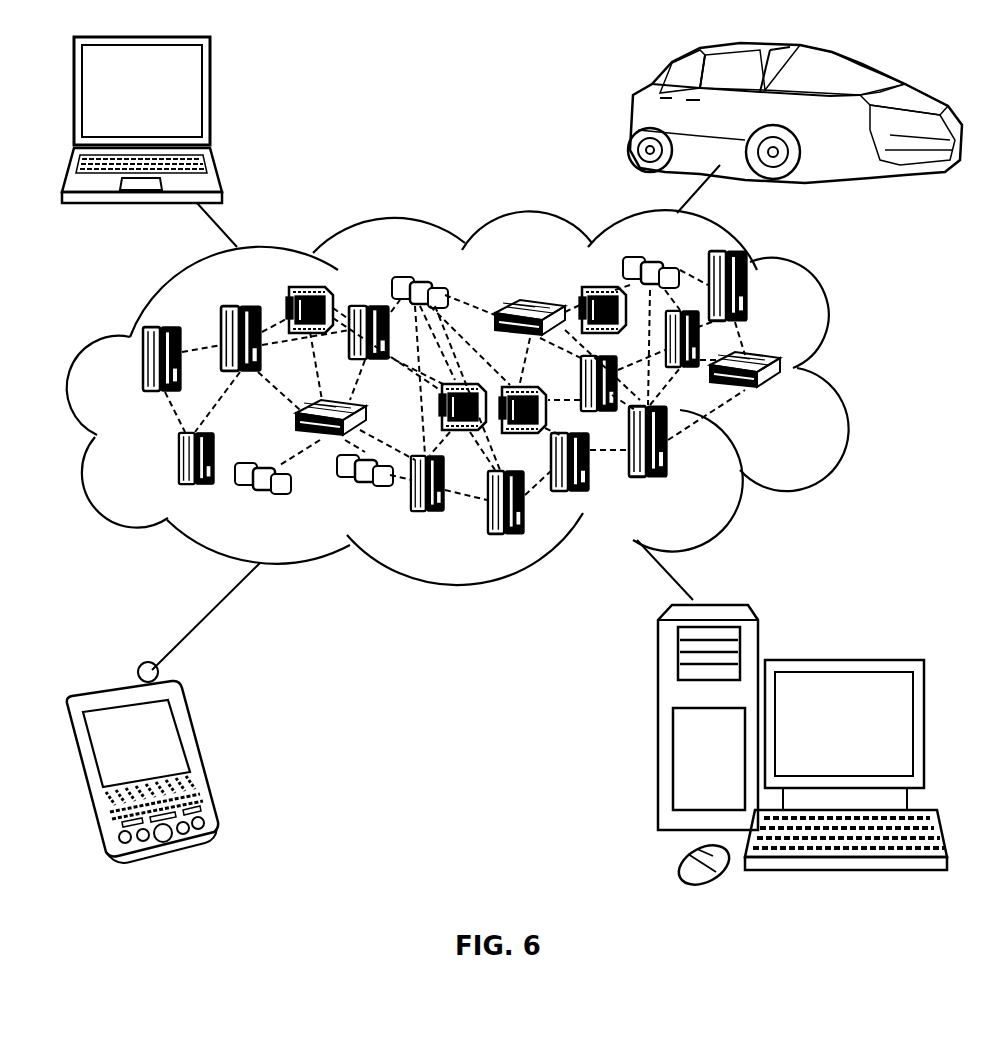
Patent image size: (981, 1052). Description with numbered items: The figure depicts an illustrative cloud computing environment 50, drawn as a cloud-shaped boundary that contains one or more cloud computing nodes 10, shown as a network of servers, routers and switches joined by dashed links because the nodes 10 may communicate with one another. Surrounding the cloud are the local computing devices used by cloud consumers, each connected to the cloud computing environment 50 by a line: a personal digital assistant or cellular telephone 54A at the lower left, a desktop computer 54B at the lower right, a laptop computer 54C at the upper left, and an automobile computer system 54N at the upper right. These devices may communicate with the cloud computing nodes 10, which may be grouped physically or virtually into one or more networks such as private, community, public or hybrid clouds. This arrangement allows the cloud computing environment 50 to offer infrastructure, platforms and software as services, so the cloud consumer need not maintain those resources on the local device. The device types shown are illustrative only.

The cloud computing node 10 is at (784, 402).
The cloud computing environment 50 is at (845, 373).
The personal digital assistant or cellular telephone 54A is at (200, 755).
The desktop computer 54B is at (840, 660).
The laptop computer 54C is at (210, 100).
The automobile computer system 54N is at (632, 118).